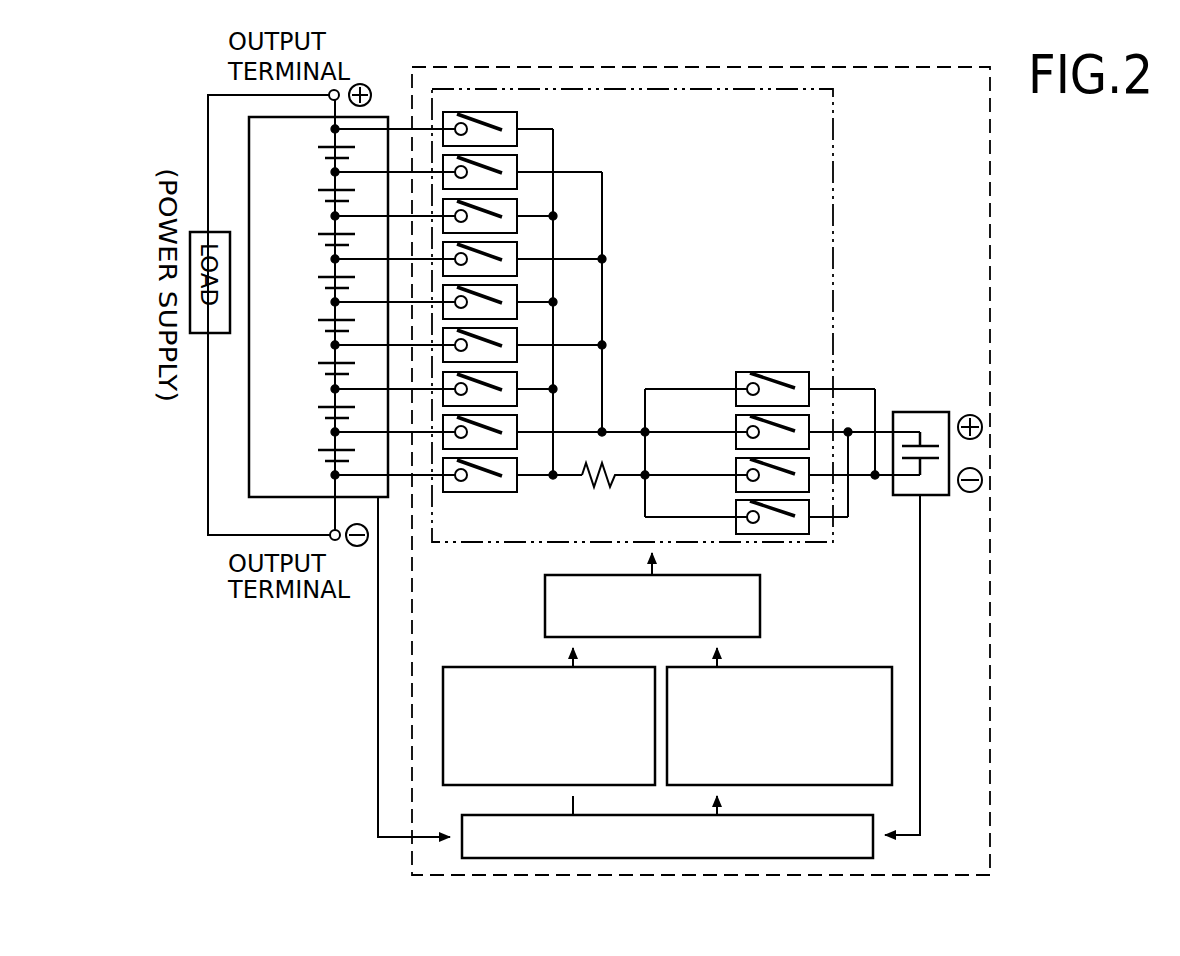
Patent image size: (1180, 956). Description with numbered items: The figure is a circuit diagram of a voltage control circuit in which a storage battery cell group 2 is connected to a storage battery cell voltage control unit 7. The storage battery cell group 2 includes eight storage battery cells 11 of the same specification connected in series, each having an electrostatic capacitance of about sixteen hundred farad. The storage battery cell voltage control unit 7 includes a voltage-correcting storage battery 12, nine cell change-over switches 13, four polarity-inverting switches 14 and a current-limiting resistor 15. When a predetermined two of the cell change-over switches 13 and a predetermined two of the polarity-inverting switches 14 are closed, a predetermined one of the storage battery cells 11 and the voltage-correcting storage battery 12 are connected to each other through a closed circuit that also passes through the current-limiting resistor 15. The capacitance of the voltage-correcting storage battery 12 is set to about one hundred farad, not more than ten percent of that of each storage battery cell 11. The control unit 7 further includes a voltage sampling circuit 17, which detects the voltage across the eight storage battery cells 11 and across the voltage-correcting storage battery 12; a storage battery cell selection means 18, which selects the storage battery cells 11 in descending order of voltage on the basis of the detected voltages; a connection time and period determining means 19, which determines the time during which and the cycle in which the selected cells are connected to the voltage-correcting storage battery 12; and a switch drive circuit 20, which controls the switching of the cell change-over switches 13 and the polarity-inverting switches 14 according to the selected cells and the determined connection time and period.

The storage battery cell group 2 is at (249, 501).
The storage battery cell voltage control unit 7 is at (400, 855).
The storage battery cell 11 is at (302, 458).
The voltage-correcting storage battery 12 is at (920, 411).
The cell change-over switch 13 is at (517, 117).
The polarity-inverting switch 14 is at (737, 507).
The current-limiting resistor 15 is at (596, 485).
The voltage sampling circuit 17 is at (813, 813).
The storage battery cell selection means 18 is at (598, 667).
The connection time and period determining means 19 is at (817, 668).
The switch drive circuit 20 is at (715, 573).